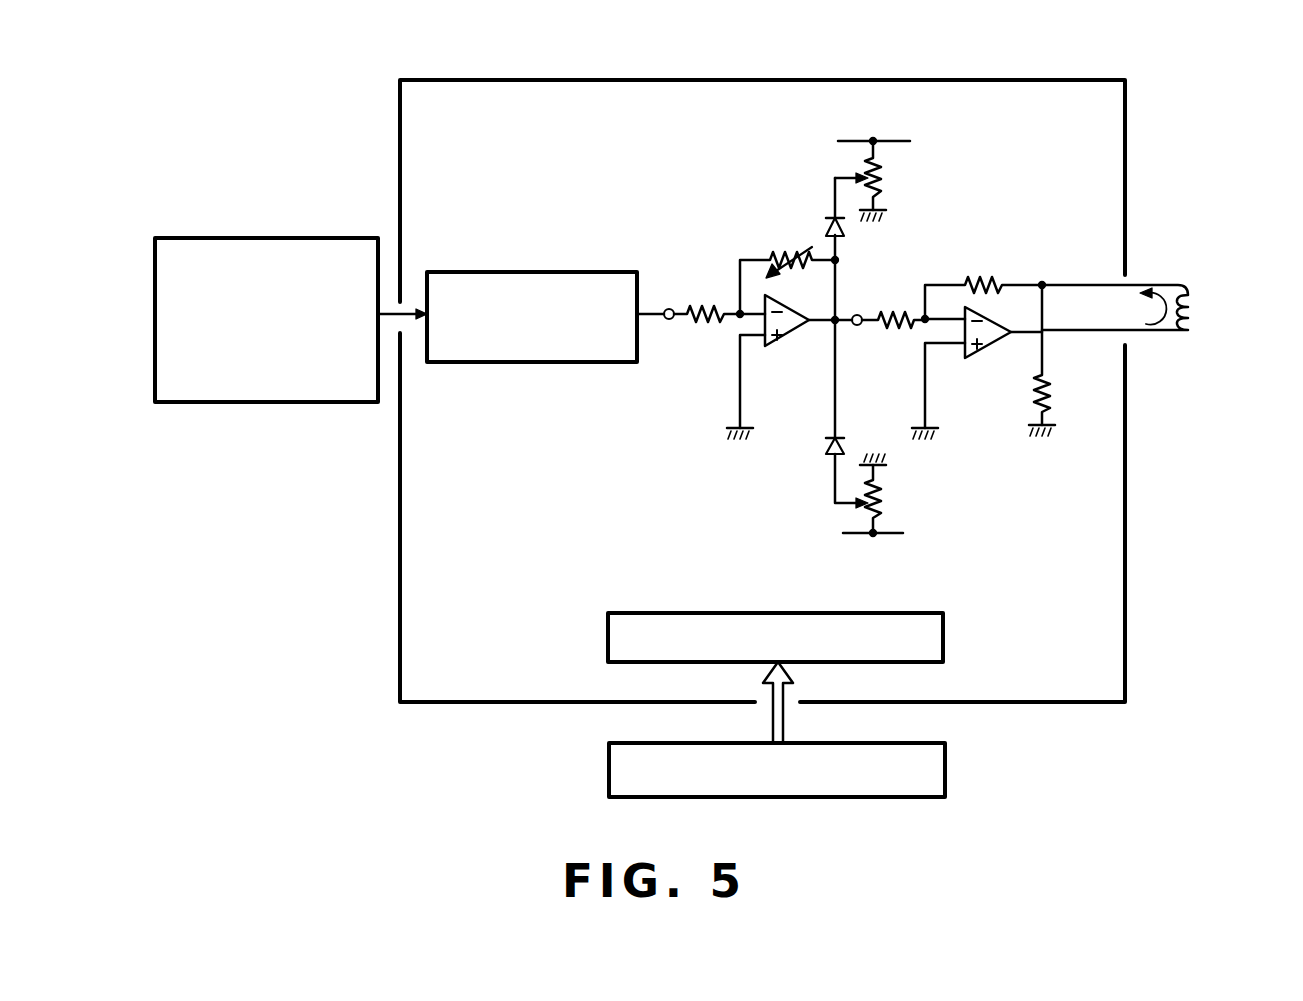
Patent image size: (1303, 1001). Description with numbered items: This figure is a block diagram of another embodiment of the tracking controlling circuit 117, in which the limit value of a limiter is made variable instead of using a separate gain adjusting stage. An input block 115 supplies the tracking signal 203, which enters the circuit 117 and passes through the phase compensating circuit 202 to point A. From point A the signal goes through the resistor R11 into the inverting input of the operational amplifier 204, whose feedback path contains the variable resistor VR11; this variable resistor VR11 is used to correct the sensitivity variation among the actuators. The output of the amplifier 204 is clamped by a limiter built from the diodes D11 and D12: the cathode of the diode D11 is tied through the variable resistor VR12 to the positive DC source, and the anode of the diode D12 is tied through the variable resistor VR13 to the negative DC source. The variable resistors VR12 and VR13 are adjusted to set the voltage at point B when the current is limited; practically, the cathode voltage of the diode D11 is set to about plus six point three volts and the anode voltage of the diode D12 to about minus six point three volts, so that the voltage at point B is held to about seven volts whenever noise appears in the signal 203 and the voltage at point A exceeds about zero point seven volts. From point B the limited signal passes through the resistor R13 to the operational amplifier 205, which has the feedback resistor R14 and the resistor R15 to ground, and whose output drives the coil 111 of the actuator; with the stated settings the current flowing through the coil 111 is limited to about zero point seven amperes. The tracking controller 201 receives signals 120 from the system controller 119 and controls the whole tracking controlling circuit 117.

The coil 111 is at (1186, 292).
The photoelectric converting element for tracking signal detection 115 is at (272, 238).
The tracking controlling circuit 117 is at (920, 80).
The system controller 119 is at (609, 772).
The control signal 120 is at (785, 718).
The tracking controller 201 is at (608, 637).
The phase compensating circuit 202 is at (548, 272).
The signal 203 is at (388, 318).
The operational amplifier 204 is at (785, 350).
The operational amplifier 205 is at (983, 356).
The resistor R11 is at (707, 298).
The resistor R13 is at (893, 306).
The resistor R14 is at (985, 284).
The resistor R15 is at (1068, 360).
The variable resistor VR11 is at (787, 267).
The variable resistor VR12 is at (895, 164).
The variable resistor VR13 is at (900, 511).
The diode D11 is at (845, 225).
The diode D12 is at (846, 432).
The point A is at (669, 320).
The point B is at (859, 326).